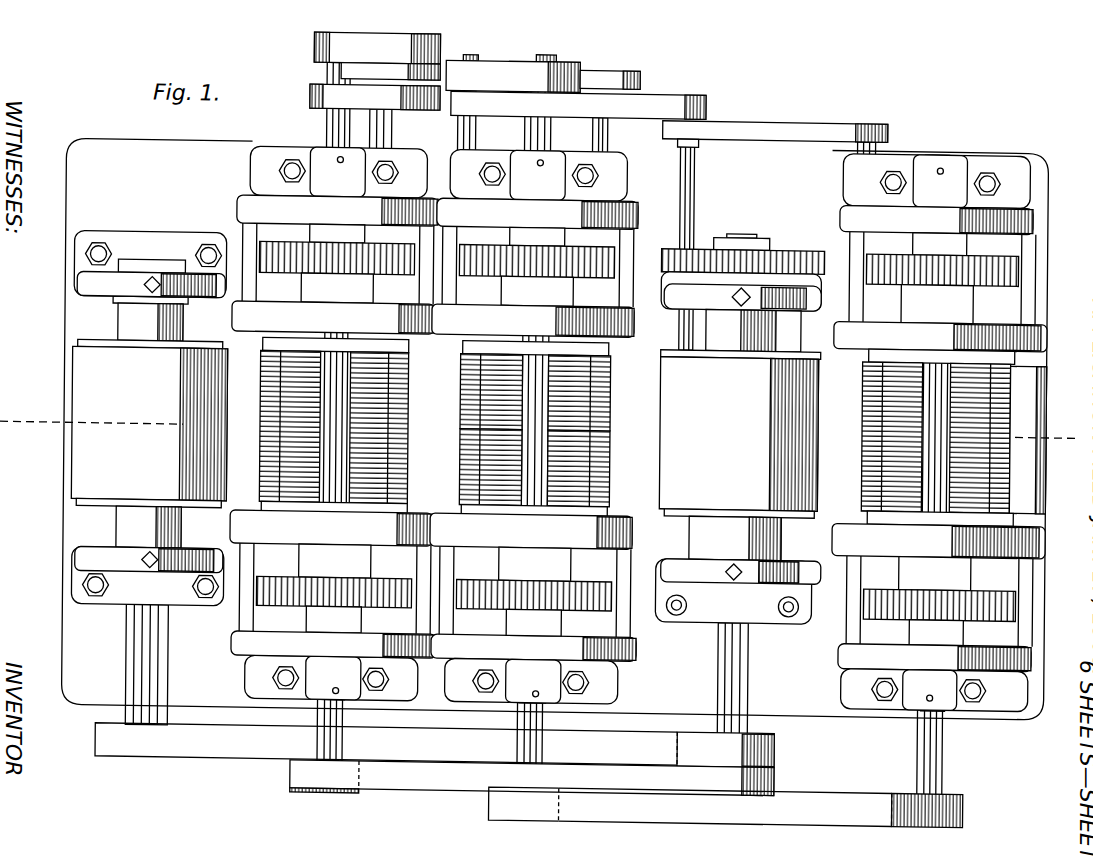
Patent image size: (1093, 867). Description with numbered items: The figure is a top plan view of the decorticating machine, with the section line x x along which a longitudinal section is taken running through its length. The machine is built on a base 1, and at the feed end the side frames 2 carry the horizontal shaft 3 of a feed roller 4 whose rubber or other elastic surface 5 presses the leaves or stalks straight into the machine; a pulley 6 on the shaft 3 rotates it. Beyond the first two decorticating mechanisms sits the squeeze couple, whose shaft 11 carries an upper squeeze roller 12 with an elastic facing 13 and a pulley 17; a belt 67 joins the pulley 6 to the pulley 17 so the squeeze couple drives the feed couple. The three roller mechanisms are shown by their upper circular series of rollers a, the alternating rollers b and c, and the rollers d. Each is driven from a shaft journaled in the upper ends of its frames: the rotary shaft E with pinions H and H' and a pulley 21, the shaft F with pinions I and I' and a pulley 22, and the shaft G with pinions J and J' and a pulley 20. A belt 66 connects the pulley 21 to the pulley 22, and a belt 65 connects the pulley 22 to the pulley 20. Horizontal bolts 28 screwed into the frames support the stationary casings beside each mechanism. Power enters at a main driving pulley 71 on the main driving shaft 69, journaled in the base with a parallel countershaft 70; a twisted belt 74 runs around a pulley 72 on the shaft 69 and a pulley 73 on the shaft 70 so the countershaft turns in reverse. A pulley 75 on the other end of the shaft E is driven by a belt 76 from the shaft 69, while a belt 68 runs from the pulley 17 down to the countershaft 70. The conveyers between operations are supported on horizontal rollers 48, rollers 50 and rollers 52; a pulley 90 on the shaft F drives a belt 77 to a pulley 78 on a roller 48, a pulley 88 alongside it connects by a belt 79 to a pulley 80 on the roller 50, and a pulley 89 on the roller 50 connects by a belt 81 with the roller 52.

The base 1 is at (64, 650).
The side frames 2 is at (73, 293).
The horizontal shaft 3 is at (128, 666).
The feed roller 4 is at (75, 510).
The elastic surface 5 is at (72, 370).
The pulley 6 is at (110, 765).
The shaft 11 is at (750, 678).
The squeeze roller 12 is at (648, 329).
The elastic facing 13 is at (790, 524).
The pulley 17 is at (777, 742).
The pulley 20 is at (955, 790).
The pulley 21 is at (340, 795).
The pulley 22 is at (493, 790).
The horizontal bolts 28 is at (233, 642).
The horizontal rollers 48 is at (447, 130).
The rollers 50 is at (692, 195).
The rollers 52 is at (880, 158).
The belt 65 is at (760, 802).
The belt 66 is at (532, 778).
The belt 67 is at (509, 746).
The belt 68 is at (760, 772).
The main driving shaft 69 is at (389, 128).
The countershaft 70 is at (600, 122).
The main driving pulley 71 is at (437, 60).
The pulley 72 is at (338, 74).
The pulley 73 is at (628, 72).
The twisted belt 74 is at (443, 76).
The pulley 75 is at (312, 114).
The belt 76 is at (307, 104).
The belt 77 is at (540, 62).
The pulley 78 is at (474, 60).
The belt 79 is at (660, 95).
The pulley 80 is at (703, 100).
The belt 81 is at (778, 117).
The pulley 88 is at (473, 128).
The pulley 89 is at (696, 142).
The pulley 90 is at (553, 60).
The upper circular series of rollers a is at (264, 418).
The rollers b is at (460, 465).
The rollers c is at (460, 395).
The upper circular series of rollers d is at (862, 433).
The section line x is at (543, 429).
The pinion H is at (314, 605).
The pinion H' is at (317, 239).
The pinion I is at (531, 608).
The pinion I' is at (540, 243).
The pinion J is at (925, 617).
The pinion J' is at (926, 252).
The rotary shaft E is at (318, 756).
The shaft F is at (520, 745).
The shaft G is at (920, 746).